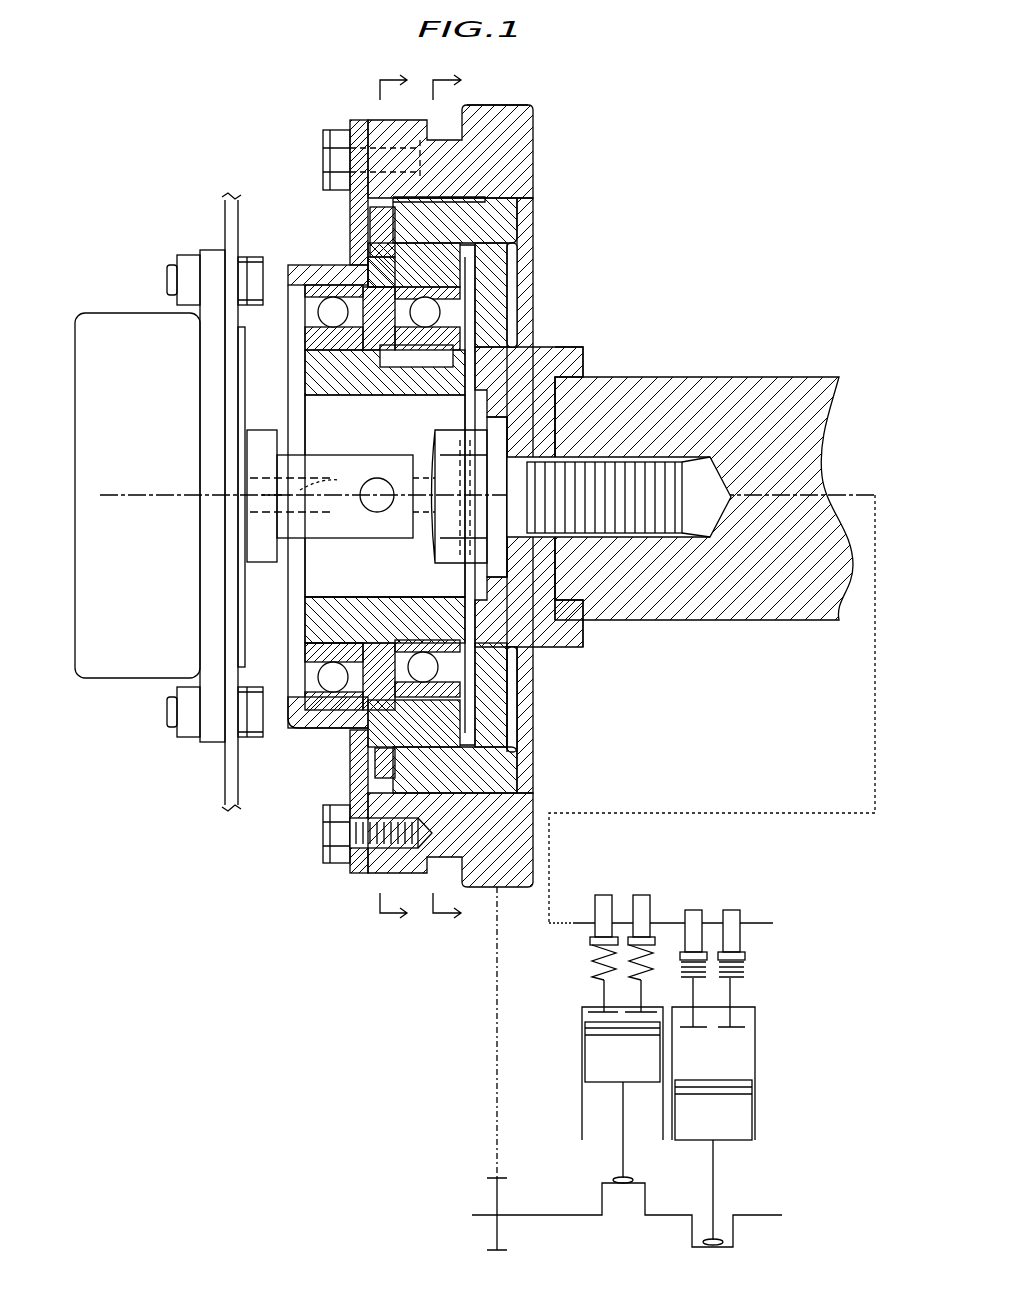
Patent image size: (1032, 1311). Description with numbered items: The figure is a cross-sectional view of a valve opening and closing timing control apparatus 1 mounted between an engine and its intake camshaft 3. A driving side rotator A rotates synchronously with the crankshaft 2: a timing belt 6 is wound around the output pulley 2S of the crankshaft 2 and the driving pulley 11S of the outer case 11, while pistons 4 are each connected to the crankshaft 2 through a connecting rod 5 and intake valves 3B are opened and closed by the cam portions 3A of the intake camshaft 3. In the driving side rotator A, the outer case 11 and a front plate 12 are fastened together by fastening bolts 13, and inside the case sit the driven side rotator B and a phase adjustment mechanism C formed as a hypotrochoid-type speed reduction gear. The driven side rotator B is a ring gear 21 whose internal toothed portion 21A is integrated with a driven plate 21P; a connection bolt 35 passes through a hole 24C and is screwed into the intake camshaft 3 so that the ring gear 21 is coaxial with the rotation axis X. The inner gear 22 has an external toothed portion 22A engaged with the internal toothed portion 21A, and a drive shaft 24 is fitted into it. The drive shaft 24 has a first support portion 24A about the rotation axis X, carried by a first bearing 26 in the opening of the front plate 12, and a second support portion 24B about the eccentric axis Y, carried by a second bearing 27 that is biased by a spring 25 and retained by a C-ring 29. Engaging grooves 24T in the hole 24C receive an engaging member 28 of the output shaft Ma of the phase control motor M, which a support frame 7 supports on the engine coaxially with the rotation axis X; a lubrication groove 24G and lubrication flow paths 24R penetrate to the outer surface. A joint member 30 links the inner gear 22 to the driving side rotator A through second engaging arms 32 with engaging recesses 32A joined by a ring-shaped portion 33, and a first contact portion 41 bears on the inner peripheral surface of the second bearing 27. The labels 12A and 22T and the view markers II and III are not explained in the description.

The valve opening and closing timing control apparatus 1 is at (274, 118).
The crankshaft 2 is at (537, 1215).
The output pulley 2S is at (495, 1200).
The intake camshaft 3 is at (755, 377).
The cam portions 3A is at (642, 895).
The intake valves 3B is at (646, 1018).
The pistons 4 is at (605, 1085).
The connecting rod 5 is at (620, 1158).
The timing belt 6 is at (494, 1028).
The support frame 7 is at (225, 785).
The outer case 11 is at (533, 143).
The driving pulley 11S is at (497, 105).
The front plate 12 is at (358, 118).
The bolt thread 12A is at (356, 826).
The fastening bolts 13 is at (323, 162).
The ring gear 21 is at (480, 202).
The internal toothed portion 21A is at (470, 245).
The driven plate 21P is at (580, 395).
The inner gear 22 is at (460, 268).
The external toothed portion 22A is at (460, 720).
The rotor tab 22T is at (372, 277).
The drive shaft 24 is at (291, 378).
The first support portion 24A is at (305, 630).
The second support portion 24B is at (540, 625).
The hole 24C is at (305, 440).
The lubrication groove 24G is at (305, 600).
The lubrication flow path 24R is at (375, 610).
The engaging grooves 24T is at (262, 515).
The spring 25 is at (440, 368).
The first bearing 26 is at (330, 315).
The second bearing 27 is at (430, 312).
The engaging member 28 is at (365, 480).
The C-ring 29 is at (512, 668).
The joint member 30 is at (380, 762).
The second engaging arms 32 is at (372, 230).
The engaging recesses 32A is at (375, 257).
The ring-shaped portion 33 is at (370, 715).
The connection bolt 35 is at (672, 520).
The first contact portion 41 is at (430, 655).
The phase control motor M is at (122, 312).
The output shaft Ma is at (380, 455).
The rotation axis X is at (483, 703).
The eccentric axis Y is at (262, 495).
The driving side rotator A is at (366, 115).
The driven side rotator B is at (535, 698).
The phase adjustment mechanism C is at (421, 804).
The section II is at (447, 497).
The section III is at (390, 497).